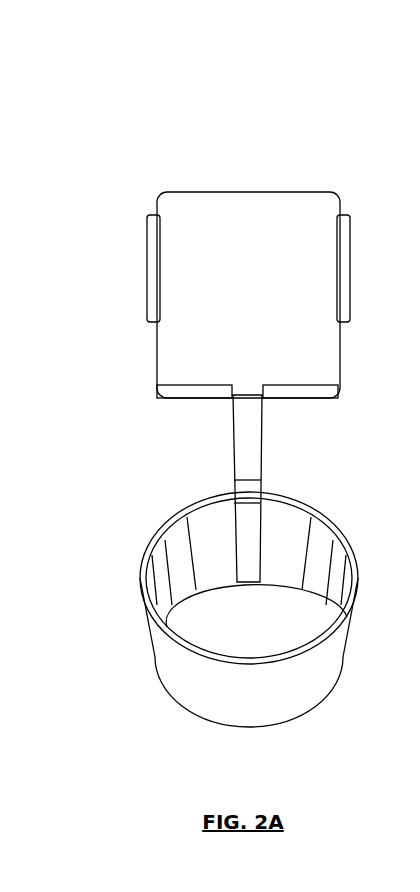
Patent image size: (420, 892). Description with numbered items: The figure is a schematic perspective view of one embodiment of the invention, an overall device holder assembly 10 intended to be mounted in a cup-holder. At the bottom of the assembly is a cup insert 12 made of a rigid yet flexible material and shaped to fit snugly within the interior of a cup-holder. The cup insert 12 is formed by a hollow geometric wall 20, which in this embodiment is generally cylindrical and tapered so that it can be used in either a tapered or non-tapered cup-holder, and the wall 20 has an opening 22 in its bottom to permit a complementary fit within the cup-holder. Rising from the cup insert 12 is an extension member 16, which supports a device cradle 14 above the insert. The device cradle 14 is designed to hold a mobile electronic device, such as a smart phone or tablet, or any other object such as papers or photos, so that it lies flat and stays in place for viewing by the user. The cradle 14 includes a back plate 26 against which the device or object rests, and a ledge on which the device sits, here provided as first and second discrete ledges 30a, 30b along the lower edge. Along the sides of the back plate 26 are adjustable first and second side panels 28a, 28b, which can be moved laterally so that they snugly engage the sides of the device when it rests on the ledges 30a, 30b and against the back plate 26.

The utensil holder assembly 10 is at (208, 138).
The cup insert 12 is at (153, 533).
The device cradle 14 is at (155, 203).
The extension member 16 is at (262, 451).
The hollow geometric wall 20 is at (142, 600).
The opening 22 is at (220, 735).
The back plate 26 is at (239, 300).
The first side panel 28a is at (145, 293).
The second side panel 28b is at (342, 217).
The first ledge 30a is at (173, 390).
The second ledge 30b is at (317, 390).